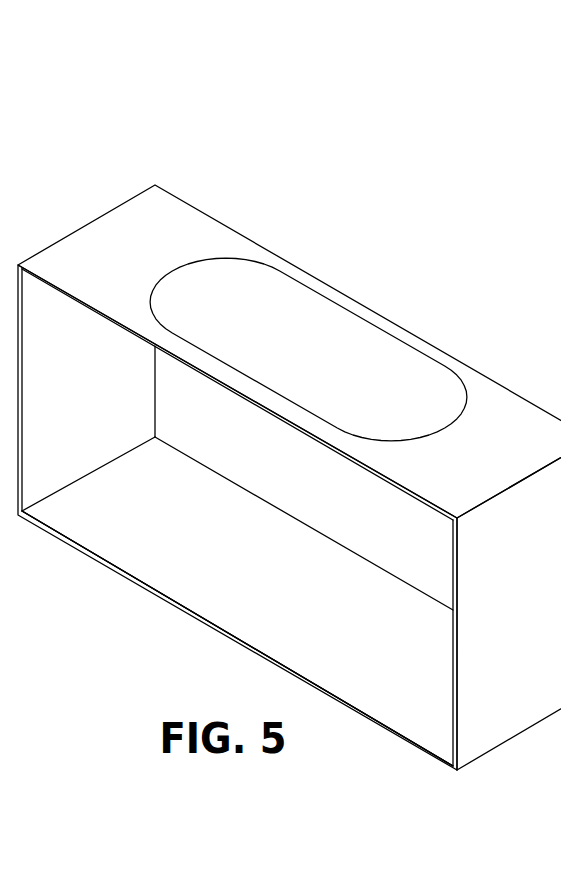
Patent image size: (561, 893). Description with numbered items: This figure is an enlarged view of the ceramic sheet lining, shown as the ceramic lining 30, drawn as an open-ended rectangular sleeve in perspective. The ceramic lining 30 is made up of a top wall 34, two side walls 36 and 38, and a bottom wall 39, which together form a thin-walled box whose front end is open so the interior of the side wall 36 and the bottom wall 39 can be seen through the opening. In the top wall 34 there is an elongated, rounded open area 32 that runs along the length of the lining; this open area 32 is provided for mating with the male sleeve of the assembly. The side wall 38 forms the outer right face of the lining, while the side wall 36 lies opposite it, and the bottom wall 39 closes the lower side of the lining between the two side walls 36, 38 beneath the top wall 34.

The ceramic lining 30 is at (368, 136).
The open area 32 is at (308, 345).
The top wall 34 is at (484, 461).
The side wall 36 is at (64, 399).
The side wall 38 is at (509, 611).
The bottom wall 39 is at (249, 579).